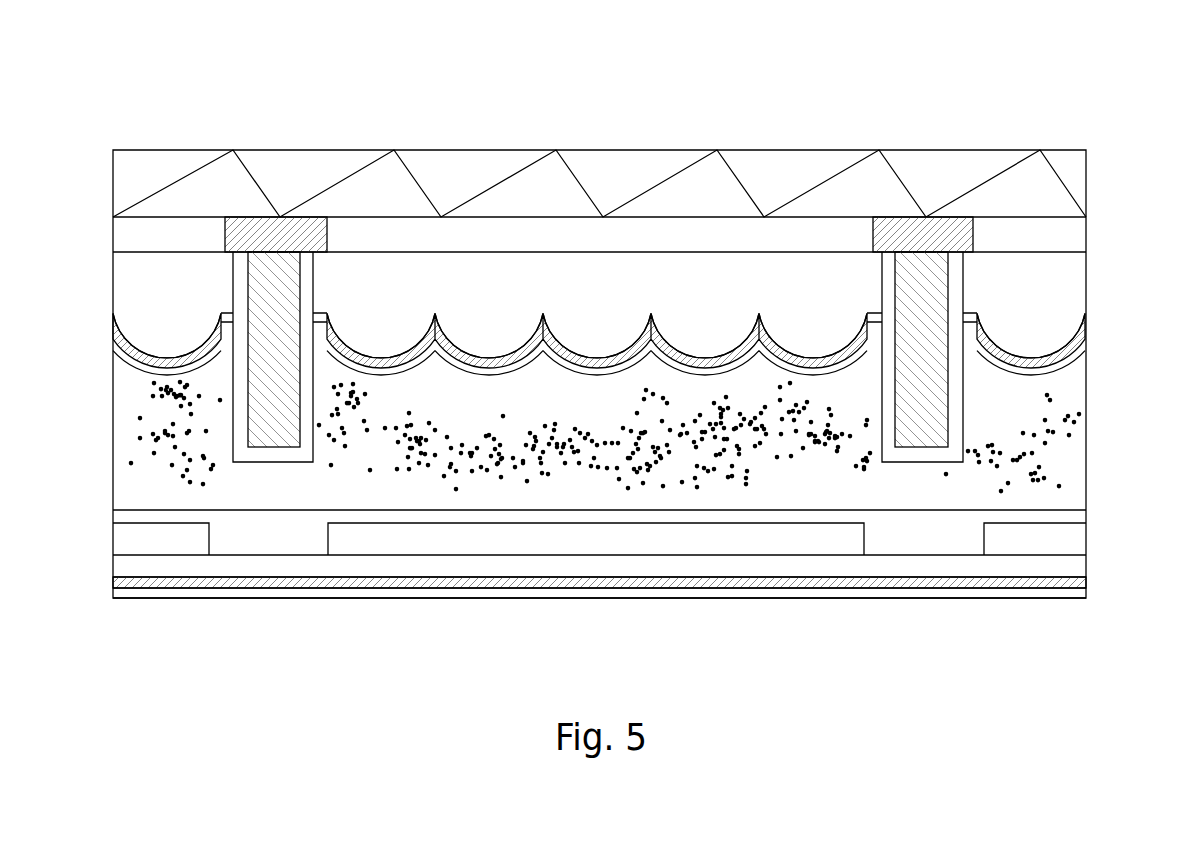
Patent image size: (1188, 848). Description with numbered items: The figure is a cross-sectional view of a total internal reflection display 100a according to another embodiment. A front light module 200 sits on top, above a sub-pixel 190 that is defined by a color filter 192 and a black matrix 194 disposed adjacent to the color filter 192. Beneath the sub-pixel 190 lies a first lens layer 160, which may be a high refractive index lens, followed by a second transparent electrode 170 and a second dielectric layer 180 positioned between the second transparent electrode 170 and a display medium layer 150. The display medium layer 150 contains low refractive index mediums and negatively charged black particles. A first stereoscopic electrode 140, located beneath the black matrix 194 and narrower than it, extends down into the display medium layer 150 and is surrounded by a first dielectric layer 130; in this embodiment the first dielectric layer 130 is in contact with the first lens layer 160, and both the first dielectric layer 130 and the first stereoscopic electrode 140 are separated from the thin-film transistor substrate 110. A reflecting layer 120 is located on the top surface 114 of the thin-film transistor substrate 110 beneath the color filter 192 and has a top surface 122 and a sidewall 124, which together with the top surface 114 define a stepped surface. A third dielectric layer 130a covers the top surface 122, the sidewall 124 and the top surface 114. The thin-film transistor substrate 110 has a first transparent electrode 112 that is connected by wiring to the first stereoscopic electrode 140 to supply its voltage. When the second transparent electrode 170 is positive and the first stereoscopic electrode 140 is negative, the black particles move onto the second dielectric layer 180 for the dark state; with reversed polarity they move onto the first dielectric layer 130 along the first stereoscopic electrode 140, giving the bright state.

The total internal reflection display 100a is at (102, 50).
The thin-film transistor substrate 110 is at (1086, 598).
The first transparent electrode 112 is at (1086, 582).
The top surface of the thin-film transistor substrate 114 is at (221, 555).
The reflecting layer 120 is at (1078, 541).
The top surface of the reflecting layer 122 is at (186, 523).
The sidewall of the reflecting layer 124 is at (209, 542).
The first dielectric layer 130 is at (957, 392).
The third dielectric layer 130a is at (1078, 516).
The first stereoscopic electrode 140 is at (935, 412).
The display medium layer 150 is at (1078, 462).
The first lens layer 160 is at (1078, 295).
The second transparent electrode 170 is at (1080, 330).
The second dielectric layer 180 is at (1078, 352).
The sub-pixel 190 is at (611, 255).
The color filter 192 is at (858, 228).
The black matrix 194 is at (945, 223).
The front light module 200 is at (1065, 158).